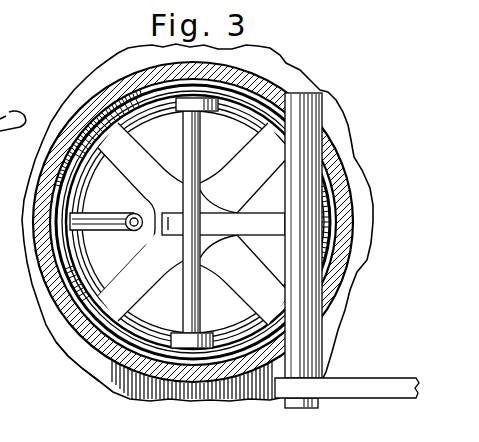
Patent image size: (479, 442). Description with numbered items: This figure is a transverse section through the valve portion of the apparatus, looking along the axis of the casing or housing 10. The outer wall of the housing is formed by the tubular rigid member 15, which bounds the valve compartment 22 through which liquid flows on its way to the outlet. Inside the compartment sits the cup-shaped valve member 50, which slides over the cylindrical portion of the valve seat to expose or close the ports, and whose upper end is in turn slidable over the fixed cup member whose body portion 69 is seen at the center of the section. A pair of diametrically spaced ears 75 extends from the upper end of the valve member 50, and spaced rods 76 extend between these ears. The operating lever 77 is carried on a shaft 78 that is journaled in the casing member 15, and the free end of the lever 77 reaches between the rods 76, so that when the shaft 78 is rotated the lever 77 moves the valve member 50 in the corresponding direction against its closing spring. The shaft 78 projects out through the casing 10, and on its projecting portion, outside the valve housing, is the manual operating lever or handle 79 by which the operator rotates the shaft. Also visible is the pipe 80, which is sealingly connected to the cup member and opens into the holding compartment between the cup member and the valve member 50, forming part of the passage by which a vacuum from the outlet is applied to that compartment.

The casing or housing 10 is at (340, 146).
The tubular rigid member 15 is at (68, 348).
The valve compartment 22 is at (270, 74).
The valve member 50 is at (87, 297).
The body portion 69 is at (143, 175).
The ears 75 is at (177, 107).
The rods 76 is at (203, 276).
The operating lever 77 is at (238, 221).
The shaft 78 is at (318, 277).
The manual operating lever or handle 79 is at (381, 392).
The pipe 80 is at (107, 213).